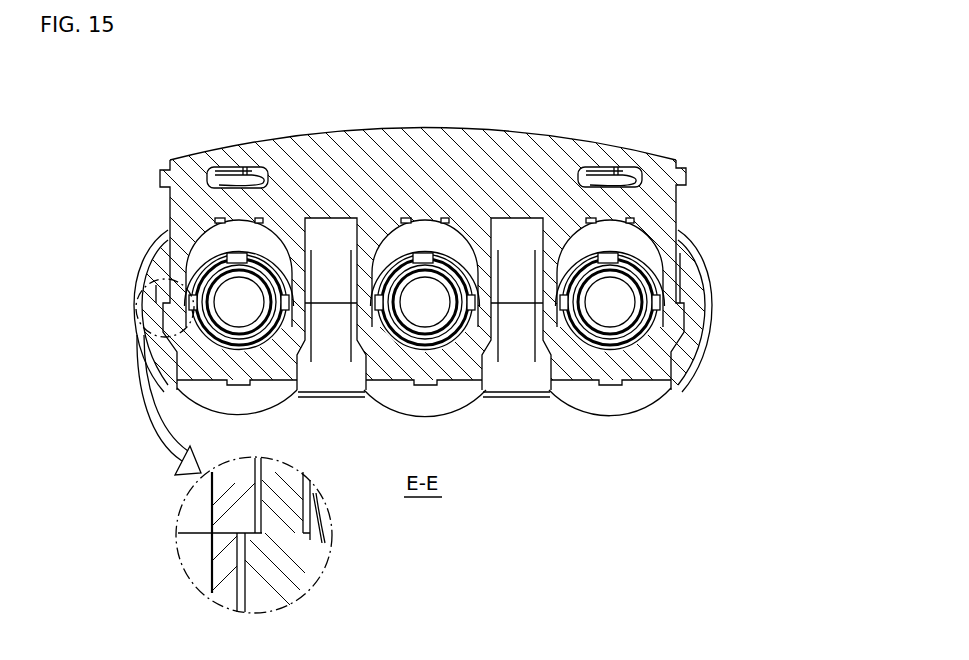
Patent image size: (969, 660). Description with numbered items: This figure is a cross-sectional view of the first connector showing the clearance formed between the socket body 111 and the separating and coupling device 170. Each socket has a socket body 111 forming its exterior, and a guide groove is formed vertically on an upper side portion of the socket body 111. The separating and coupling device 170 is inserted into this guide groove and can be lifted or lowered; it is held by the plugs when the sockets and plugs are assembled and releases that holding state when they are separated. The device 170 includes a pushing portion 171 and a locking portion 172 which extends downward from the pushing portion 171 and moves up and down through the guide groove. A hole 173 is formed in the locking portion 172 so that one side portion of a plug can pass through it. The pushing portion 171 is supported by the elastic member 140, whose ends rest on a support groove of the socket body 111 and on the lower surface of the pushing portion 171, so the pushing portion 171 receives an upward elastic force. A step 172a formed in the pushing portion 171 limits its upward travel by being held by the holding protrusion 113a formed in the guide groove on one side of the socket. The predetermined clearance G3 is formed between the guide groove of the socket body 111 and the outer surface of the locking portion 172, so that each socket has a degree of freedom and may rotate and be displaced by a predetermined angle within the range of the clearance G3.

The elastic member 140 is at (623, 176).
The separating and coupling device 170 is at (507, 272).
The pushing portion 171 is at (643, 154).
The locking portion 172 is at (660, 200).
The hole 173 is at (613, 240).
The socket body 111 is at (690, 288).
The clearance G3 is at (705, 327).
The step 172a is at (258, 522).
The holding protrusion 113a is at (235, 548).